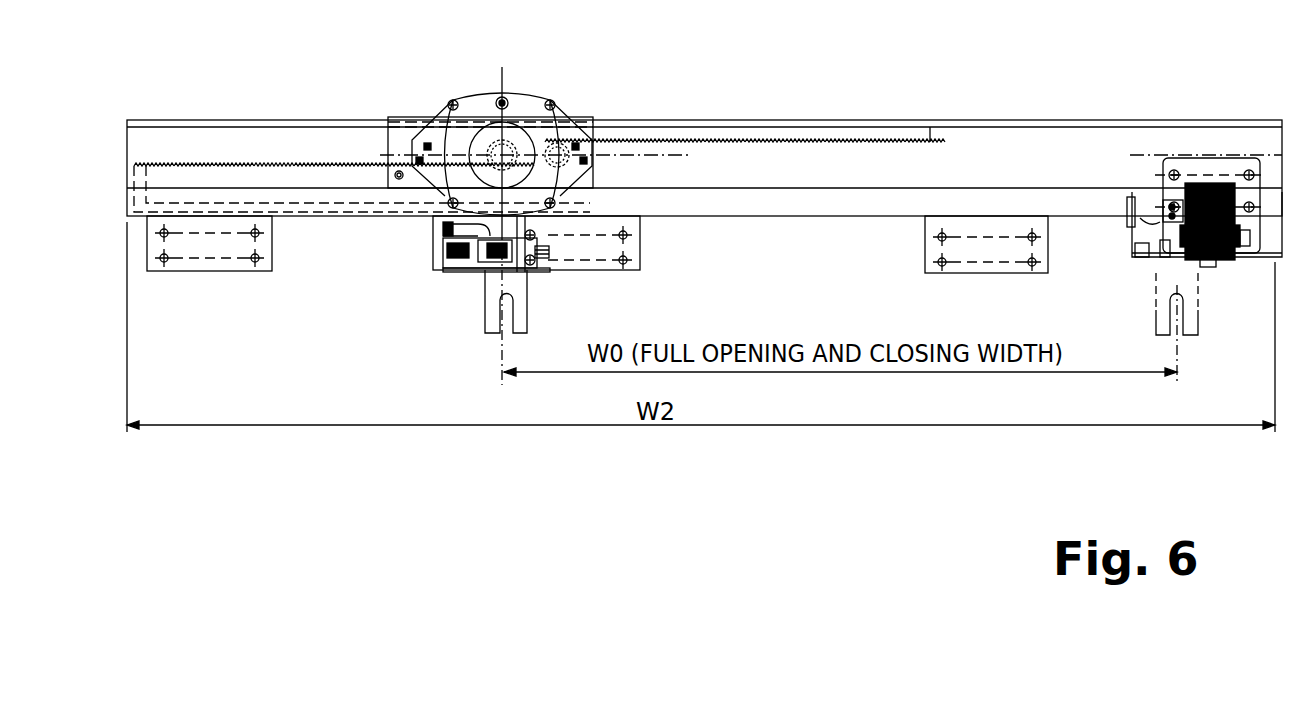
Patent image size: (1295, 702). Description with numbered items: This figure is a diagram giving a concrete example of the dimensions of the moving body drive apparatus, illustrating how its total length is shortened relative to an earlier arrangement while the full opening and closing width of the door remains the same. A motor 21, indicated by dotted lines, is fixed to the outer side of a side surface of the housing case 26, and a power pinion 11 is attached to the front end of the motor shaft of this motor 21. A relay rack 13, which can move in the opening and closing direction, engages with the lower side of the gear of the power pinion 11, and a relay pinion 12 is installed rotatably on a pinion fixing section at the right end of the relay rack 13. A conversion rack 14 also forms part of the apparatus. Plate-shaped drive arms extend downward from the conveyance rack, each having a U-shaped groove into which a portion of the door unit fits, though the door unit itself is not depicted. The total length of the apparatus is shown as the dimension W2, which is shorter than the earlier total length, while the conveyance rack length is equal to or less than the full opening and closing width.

The power pinion 11 is at (490, 140).
The relay pinion 12 is at (563, 138).
The relay rack 13 is at (288, 180).
The conversion rack 14 is at (872, 138).
The motor 21 is at (522, 103).
The housing case 26 is at (1050, 122).